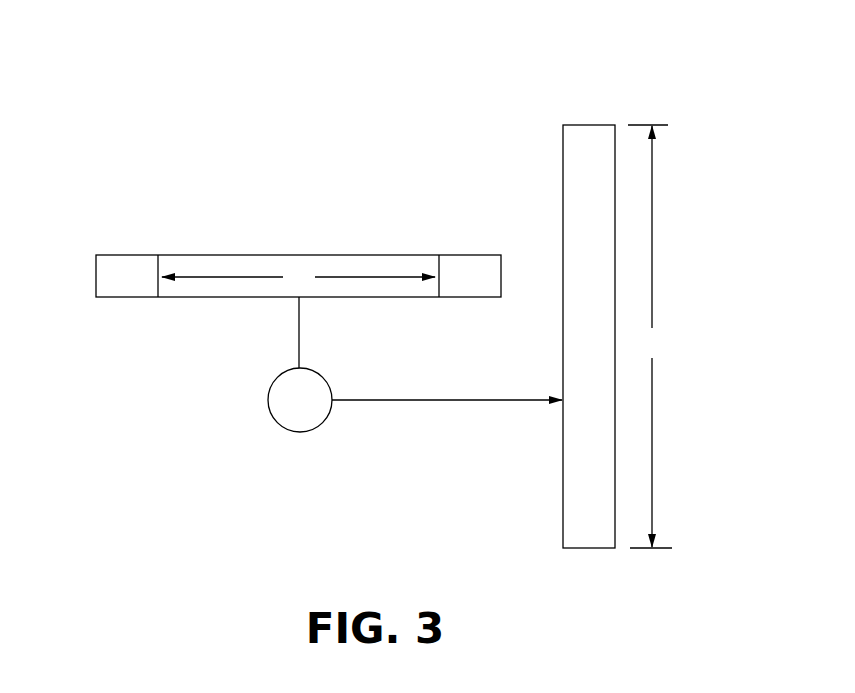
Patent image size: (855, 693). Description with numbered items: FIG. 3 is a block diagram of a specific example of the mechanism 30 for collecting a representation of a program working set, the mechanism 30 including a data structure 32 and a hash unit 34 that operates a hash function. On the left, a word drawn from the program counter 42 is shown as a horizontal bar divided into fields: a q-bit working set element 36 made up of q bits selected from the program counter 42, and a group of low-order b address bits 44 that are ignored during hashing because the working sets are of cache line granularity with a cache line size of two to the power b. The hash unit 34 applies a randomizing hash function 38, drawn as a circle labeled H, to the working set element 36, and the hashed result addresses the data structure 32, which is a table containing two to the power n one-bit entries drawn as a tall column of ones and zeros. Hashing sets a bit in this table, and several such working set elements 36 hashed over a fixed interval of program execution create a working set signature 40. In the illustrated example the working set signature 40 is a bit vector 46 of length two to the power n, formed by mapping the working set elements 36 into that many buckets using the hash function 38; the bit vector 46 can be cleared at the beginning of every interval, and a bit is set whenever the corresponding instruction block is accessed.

The mechanism 30 is at (145, 87).
The data structure 32 is at (612, 102).
The hash unit 34 is at (257, 448).
The q-bit working set element 36 is at (437, 243).
The randomizing hash function 38 is at (268, 400).
The working set signature 40 is at (563, 188).
The program counter 42 is at (500, 198).
The low-order b address bits 44 is at (500, 243).
The 2^n-bit vector 46 is at (700, 125).